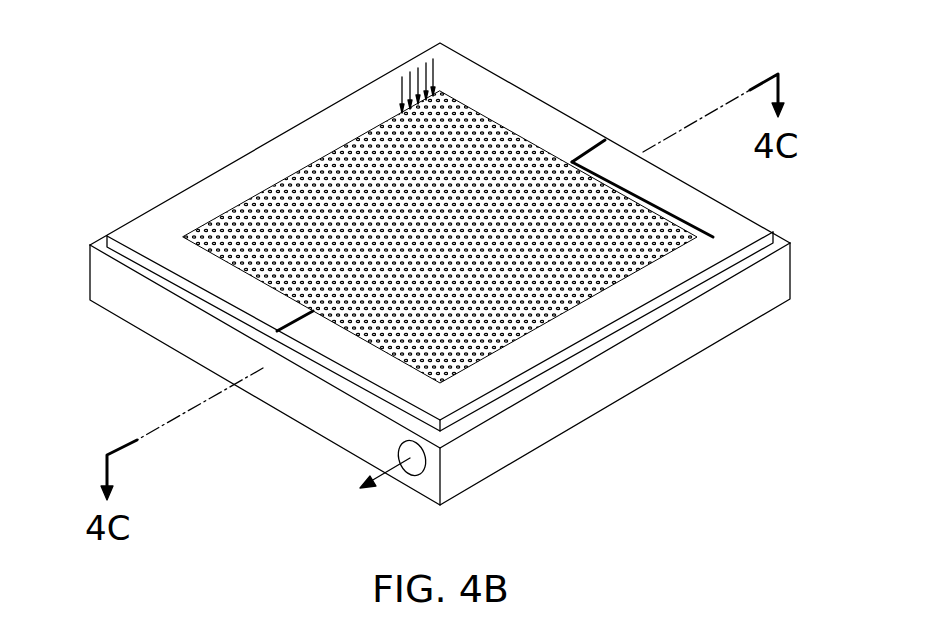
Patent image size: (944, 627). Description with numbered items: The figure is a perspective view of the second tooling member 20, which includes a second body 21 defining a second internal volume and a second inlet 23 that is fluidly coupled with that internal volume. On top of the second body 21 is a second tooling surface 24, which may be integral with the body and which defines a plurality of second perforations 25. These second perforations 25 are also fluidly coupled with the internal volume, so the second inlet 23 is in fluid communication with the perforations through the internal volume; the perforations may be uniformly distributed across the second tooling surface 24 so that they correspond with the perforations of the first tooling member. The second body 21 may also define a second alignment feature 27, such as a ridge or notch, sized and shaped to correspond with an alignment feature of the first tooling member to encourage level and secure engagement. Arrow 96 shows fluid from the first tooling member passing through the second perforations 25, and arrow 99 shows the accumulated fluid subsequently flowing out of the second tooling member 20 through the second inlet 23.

The second tooling member 20 is at (440, 124).
The second body 21 is at (108, 281).
The second inlet 23 is at (414, 477).
The second tooling surface 24 is at (204, 226).
The plurality of second perforations 25 is at (262, 196).
The second alignment feature 27 is at (278, 332).
The arrow 96 is at (400, 93).
The arrow 99 is at (377, 470).